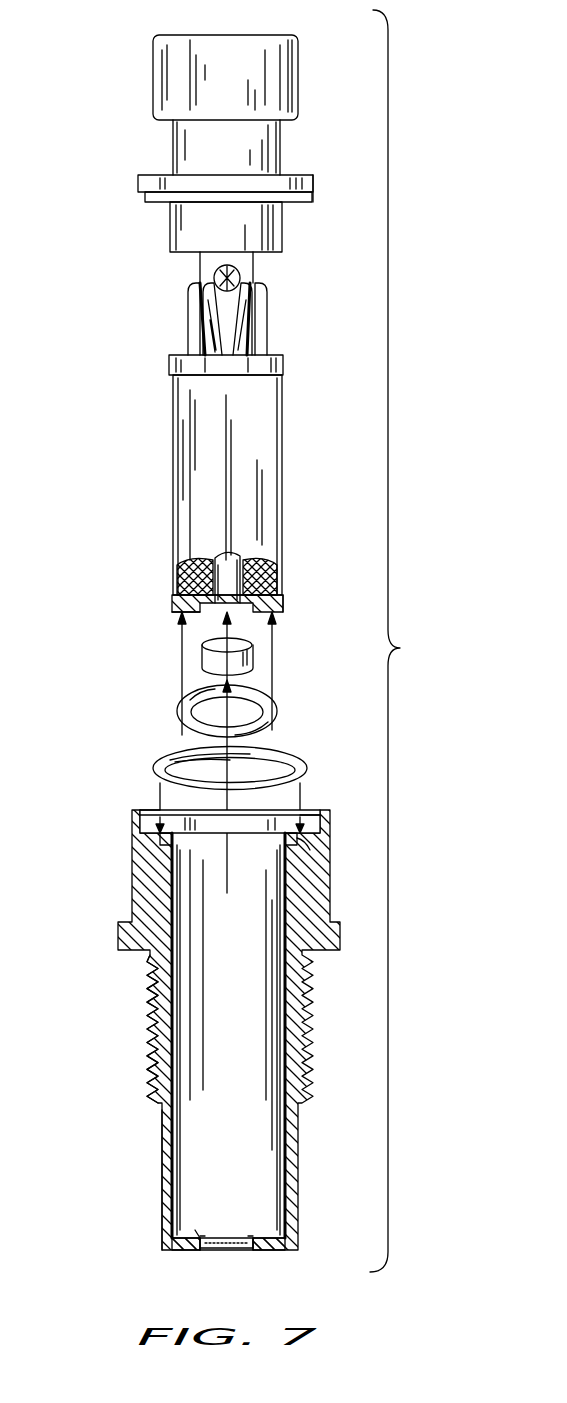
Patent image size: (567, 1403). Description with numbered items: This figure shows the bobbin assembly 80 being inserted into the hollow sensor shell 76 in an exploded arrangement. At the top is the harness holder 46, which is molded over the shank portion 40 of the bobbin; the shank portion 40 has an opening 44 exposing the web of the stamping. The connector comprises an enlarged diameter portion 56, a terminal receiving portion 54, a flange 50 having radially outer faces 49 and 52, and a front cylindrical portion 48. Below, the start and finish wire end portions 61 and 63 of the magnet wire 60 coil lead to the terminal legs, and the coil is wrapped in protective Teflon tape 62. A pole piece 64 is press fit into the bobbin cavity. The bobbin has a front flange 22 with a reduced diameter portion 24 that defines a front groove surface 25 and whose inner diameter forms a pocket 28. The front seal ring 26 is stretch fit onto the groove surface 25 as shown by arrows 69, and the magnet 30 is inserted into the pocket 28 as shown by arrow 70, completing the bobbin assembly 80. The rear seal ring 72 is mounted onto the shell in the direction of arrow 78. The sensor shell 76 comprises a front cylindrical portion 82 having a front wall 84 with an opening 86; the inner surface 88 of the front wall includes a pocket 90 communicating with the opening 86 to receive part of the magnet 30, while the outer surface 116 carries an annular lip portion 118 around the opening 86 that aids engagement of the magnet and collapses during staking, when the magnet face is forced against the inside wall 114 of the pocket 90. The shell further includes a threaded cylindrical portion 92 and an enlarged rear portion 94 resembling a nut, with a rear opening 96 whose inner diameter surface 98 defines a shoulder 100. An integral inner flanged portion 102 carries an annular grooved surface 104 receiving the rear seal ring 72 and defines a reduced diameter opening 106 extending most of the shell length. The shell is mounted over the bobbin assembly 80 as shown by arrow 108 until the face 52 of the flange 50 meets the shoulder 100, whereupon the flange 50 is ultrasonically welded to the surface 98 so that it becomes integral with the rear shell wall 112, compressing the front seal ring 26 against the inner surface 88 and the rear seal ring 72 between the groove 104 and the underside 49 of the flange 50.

The front flange 22 is at (166, 601).
The reduced diameter portion 24 is at (185, 607).
The front groove surface 25 is at (286, 612).
The front seal ring 26 is at (275, 716).
The pocket 28 is at (275, 562).
The magnet 30 is at (238, 672).
The shank portion 40 is at (245, 263).
The opening 44 is at (215, 275).
The harness holder 46 is at (140, 76).
The front cylindrical portion 48 is at (258, 222).
The radially outer face 49 is at (150, 208).
The flange 50 is at (140, 185).
The radially outer face 52 is at (315, 192).
The terminal receiving portion 54 is at (180, 150).
The enlarged diameter portion 56 is at (273, 70).
The magnet wire 60 is at (178, 590).
The start wire end portion 61 is at (200, 322).
The tape 62 is at (250, 438).
The finish wire end portion 63 is at (255, 322).
The pole piece 64 is at (230, 568).
The arrows 69 is at (182, 652).
The arrow 70 is at (232, 630).
The rear seal ring 72 is at (160, 770).
The sensor shell 76 is at (130, 1067).
The arrow 78 is at (303, 785).
The bobbin assembly 80 is at (130, 382).
The front cylindrical portion 82 is at (165, 1152).
The front wall 84 is at (186, 1249).
The opening 86 is at (231, 1253).
The inner surface 88 is at (196, 1233).
The pocket 90 is at (228, 1238).
The threaded cylindrical portion 92 is at (147, 1024).
The rear portion 94 is at (143, 880).
The rear opening 96 is at (150, 810).
The inner diameter surface 98 is at (312, 824).
The shoulder 100 is at (138, 808).
The inner flanged portion 102 is at (147, 830).
The annular grooved surface 104 is at (312, 850).
The reduced diameter opening 106 is at (213, 963).
The arrow 108 is at (197, 747).
The rear shell wall 112 is at (318, 812).
The inside wall 114 is at (203, 1234).
The outer surface 116 is at (270, 1250).
The lip portion 118 is at (202, 1250).